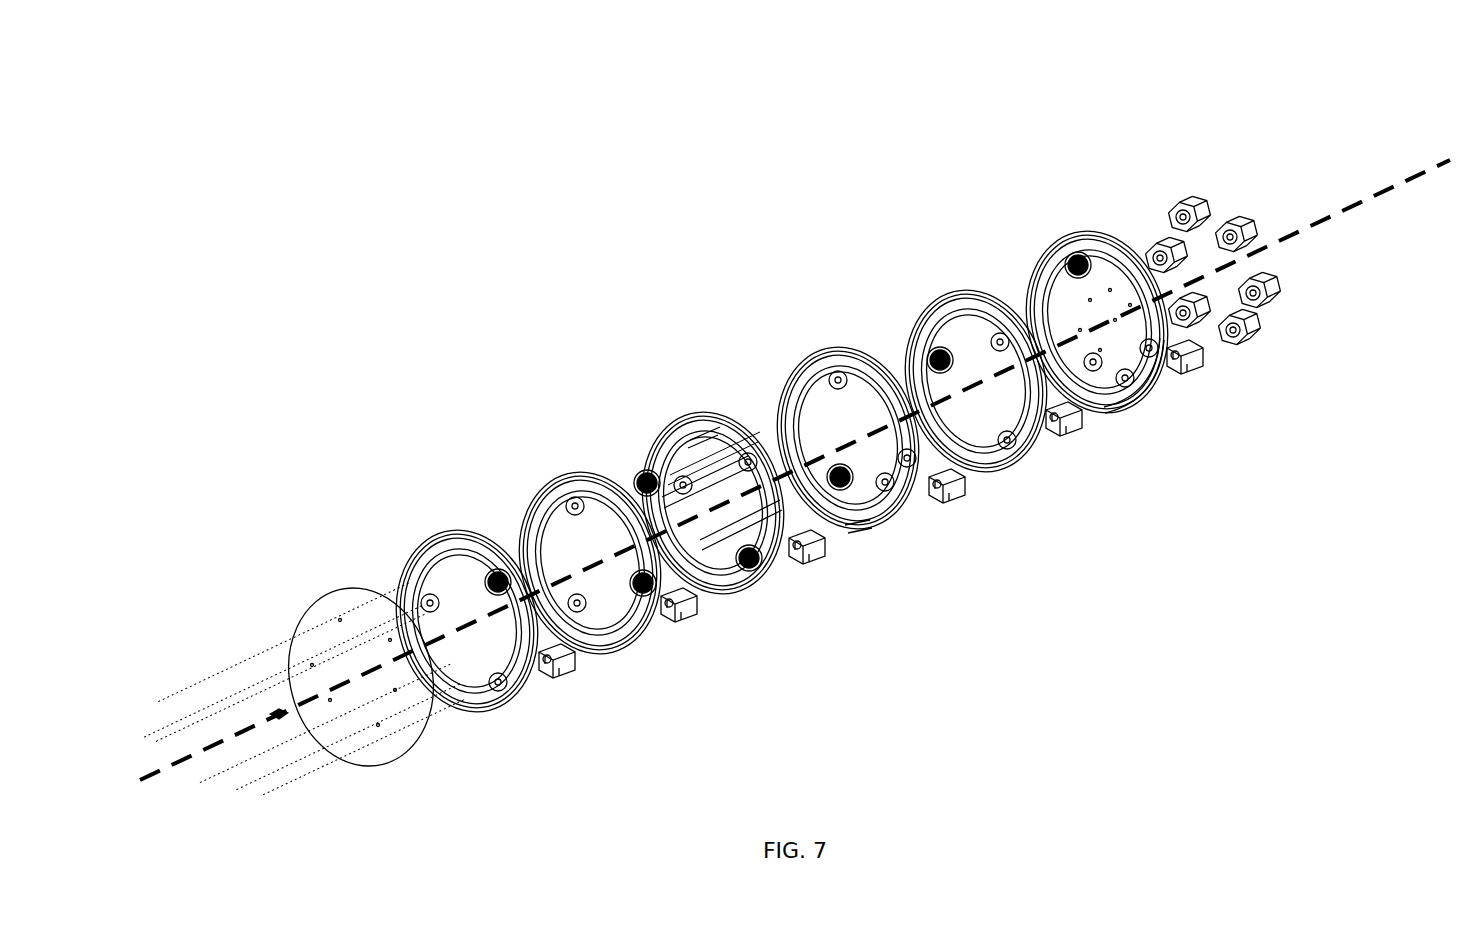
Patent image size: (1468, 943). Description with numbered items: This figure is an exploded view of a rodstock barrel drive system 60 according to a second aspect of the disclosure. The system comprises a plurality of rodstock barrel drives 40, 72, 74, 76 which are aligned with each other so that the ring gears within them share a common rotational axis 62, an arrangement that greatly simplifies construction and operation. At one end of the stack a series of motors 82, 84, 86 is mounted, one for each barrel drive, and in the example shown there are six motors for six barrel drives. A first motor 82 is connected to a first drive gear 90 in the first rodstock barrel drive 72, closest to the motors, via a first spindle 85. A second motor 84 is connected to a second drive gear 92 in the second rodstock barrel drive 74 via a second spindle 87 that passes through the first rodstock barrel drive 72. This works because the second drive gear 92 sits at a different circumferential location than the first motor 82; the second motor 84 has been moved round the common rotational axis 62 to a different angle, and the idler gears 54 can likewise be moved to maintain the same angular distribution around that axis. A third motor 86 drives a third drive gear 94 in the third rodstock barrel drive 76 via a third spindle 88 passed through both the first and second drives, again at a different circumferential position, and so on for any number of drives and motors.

The rodstock barrel drive system 60 is at (352, 208).
The common rotational axis 62 is at (148, 775).
The rodstock barrel drive 40 is at (727, 597).
The second spindle 87 is at (643, 497).
The first spindle 85 is at (695, 443).
The third spindle 88 is at (736, 560).
The third drive gear 94 is at (833, 463).
The third rodstock barrel drive 76 is at (852, 528).
The second drive gear 92 is at (937, 370).
The second rodstock barrel drive 74 is at (1005, 475).
The first drive gear 90 is at (1072, 262).
The idler gears 54 is at (1093, 370).
The first rodstock barrel drive 72 is at (1165, 395).
The first motor 82 is at (1213, 197).
The second motor 84 is at (1155, 237).
The third motor 86 is at (1210, 327).